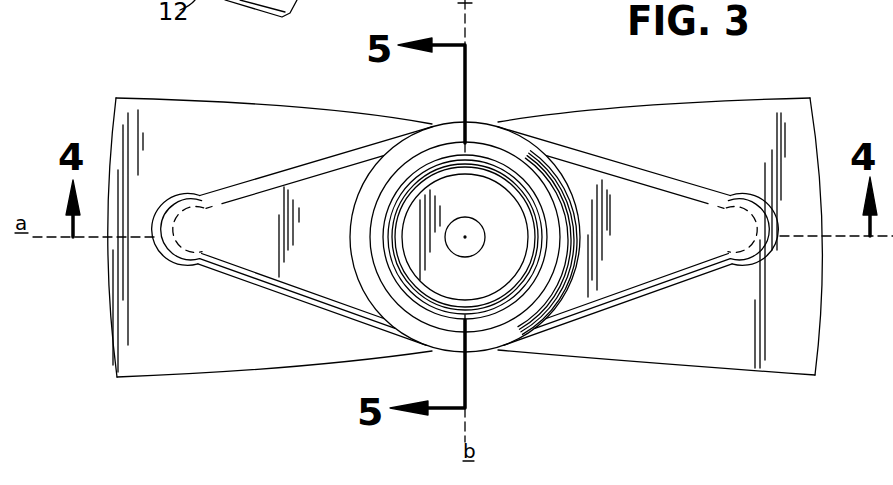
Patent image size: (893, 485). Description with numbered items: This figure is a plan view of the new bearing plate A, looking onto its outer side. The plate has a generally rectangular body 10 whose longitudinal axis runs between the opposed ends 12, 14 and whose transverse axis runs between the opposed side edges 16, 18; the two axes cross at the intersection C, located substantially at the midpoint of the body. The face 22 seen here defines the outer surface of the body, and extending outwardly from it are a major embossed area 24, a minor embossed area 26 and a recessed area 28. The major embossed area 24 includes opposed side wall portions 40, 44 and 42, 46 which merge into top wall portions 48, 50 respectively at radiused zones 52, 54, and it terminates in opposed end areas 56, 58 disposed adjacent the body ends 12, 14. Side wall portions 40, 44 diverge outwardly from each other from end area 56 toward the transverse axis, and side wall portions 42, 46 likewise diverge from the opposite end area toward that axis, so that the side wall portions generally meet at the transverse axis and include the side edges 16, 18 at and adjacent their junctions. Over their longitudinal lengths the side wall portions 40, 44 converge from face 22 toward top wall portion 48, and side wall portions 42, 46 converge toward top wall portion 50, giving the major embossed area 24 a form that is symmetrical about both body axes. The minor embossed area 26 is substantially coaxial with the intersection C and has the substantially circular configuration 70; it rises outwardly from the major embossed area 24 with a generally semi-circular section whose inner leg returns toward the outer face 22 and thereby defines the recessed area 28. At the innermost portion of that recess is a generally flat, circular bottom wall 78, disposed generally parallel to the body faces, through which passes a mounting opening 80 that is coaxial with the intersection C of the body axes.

The body 10 is at (200, 98).
The end 12 is at (108, 305).
The end 14 is at (818, 118).
The side edge 16 is at (615, 366).
The side edge 18 is at (611, 107).
The outer face 22 is at (752, 106).
The major embossed area 24 is at (266, 192).
The minor embossed area 26 is at (436, 121).
The recessed area 28 is at (472, 178).
The side wall portion 40 is at (222, 283).
The side wall portion 42 is at (613, 318).
The side wall portion 44 is at (338, 150).
The side wall portion 46 is at (605, 157).
The top wall portion 48 is at (333, 229).
The top wall portion 50 is at (657, 229).
The radiused zone 52 is at (323, 311).
The radiused zone 54 is at (656, 175).
The end area 56 is at (181, 218).
The end area 58 is at (755, 225).
The circular configuration 70 is at (518, 325).
The bottom wall 78 is at (503, 289).
The mounting opening 80 is at (450, 244).
The bearing plate A is at (529, 112).
The intersection C is at (465, 237).